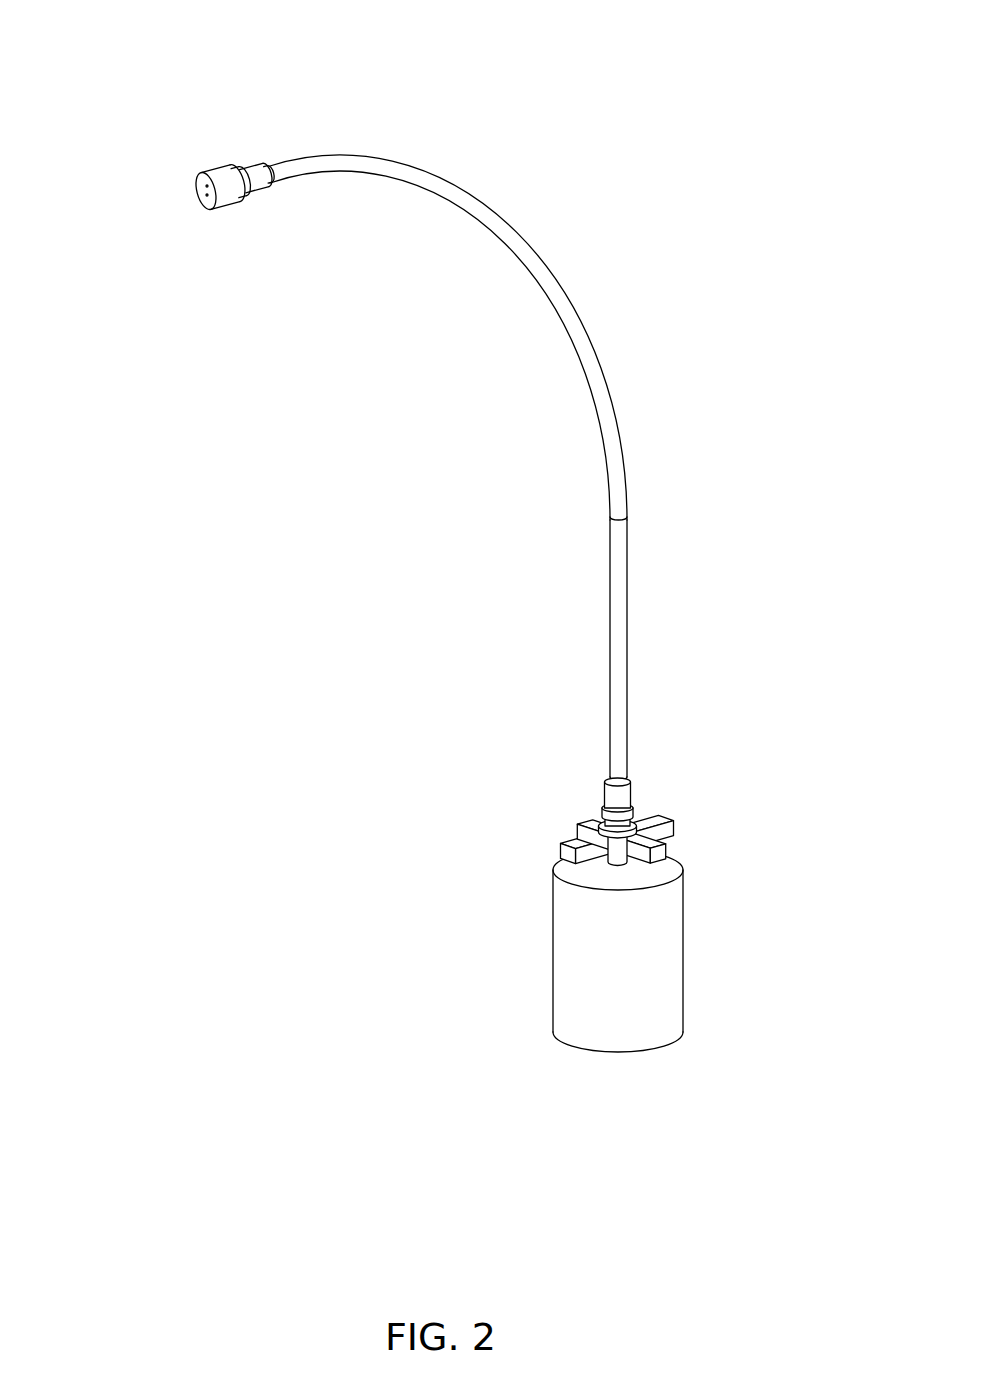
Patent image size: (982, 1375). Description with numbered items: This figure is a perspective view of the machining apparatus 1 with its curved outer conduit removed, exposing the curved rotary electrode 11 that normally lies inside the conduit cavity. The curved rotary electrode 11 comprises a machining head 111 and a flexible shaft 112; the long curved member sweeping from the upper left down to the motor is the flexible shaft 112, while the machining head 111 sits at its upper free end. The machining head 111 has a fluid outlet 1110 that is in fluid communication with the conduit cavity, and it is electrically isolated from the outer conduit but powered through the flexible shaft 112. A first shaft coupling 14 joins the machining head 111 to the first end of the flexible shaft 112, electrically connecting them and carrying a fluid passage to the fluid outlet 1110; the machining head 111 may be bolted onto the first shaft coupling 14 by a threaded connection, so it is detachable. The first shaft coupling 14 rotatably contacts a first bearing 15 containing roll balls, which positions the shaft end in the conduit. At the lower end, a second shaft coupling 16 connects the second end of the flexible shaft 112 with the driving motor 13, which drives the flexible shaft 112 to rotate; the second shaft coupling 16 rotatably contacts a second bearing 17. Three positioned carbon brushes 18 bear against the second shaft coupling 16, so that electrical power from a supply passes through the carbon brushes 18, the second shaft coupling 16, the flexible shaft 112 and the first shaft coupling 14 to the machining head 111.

The machining apparatus 1 is at (605, 75).
The curved rotary electrode 11 is at (583, 430).
The machining head 111 is at (228, 199).
The fluid outlet 1110 is at (207, 195).
The flexible shaft 112 is at (575, 325).
The driving motor 13 is at (665, 970).
The first shaft coupling 14 is at (263, 178).
The first bearing 15 is at (239, 166).
The second shaft coupling 16 is at (627, 855).
The second bearing 17 is at (632, 815).
The carbon brushes 18 is at (650, 848).